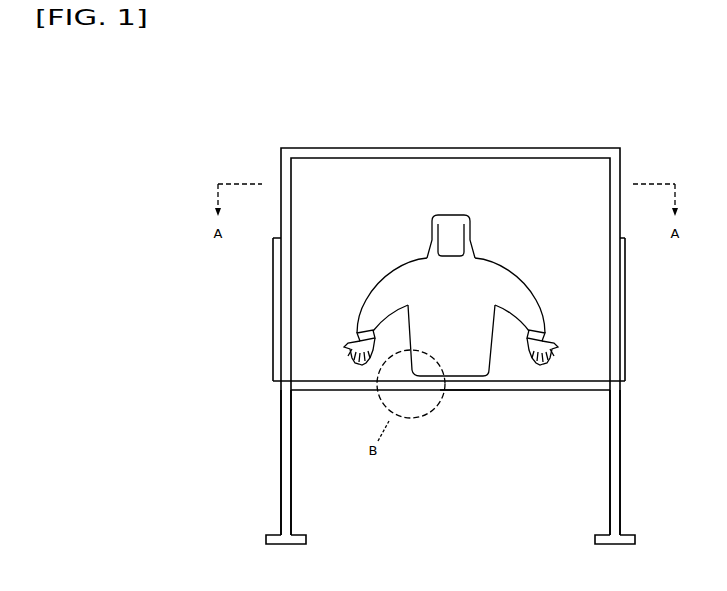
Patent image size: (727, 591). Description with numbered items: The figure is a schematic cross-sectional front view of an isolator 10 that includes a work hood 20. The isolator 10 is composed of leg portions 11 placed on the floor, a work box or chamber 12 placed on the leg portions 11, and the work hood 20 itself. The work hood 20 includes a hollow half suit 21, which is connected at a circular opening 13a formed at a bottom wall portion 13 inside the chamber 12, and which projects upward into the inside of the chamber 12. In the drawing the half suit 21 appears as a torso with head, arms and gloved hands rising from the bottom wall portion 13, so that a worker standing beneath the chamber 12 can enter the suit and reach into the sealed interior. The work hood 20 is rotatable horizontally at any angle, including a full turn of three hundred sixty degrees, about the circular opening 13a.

The isolator 10 is at (536, 108).
The leg portions 11 is at (282, 433).
The work box (chamber) 12 is at (378, 172).
The bottom wall portion 13 is at (514, 374).
The circular opening 13a is at (463, 403).
The work hood 20 is at (390, 260).
The hollow half suit 21 is at (492, 278).